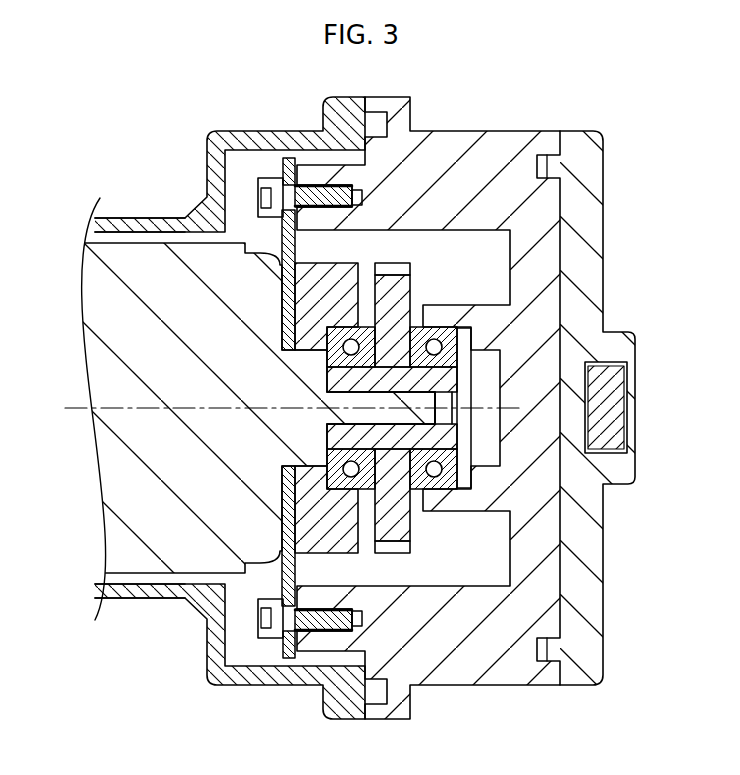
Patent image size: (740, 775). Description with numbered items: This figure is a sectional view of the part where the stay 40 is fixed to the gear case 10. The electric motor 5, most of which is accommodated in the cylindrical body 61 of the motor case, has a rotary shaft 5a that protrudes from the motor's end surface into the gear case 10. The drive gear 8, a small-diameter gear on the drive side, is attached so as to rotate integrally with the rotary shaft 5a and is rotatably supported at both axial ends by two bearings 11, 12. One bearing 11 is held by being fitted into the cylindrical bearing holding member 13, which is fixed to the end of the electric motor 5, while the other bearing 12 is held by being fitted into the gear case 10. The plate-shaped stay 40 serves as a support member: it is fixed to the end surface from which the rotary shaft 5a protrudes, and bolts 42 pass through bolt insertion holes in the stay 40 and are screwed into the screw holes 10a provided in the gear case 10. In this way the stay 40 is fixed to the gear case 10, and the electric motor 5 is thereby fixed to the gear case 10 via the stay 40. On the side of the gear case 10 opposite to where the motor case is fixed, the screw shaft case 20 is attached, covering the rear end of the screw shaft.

The electric motor 5 is at (125, 555).
The rotary shaft 5a is at (396, 414).
The drive gear 8 is at (398, 282).
The gear case 10 is at (497, 155).
The screw holes 10a is at (315, 190).
The bearing 11 is at (288, 485).
The bearing 12 is at (437, 478).
The bearing holding member 13 is at (338, 530).
The screw shaft case 20 is at (587, 215).
The stay 40 is at (218, 158).
The bolts 42 is at (275, 193).
The body 61 is at (127, 216).